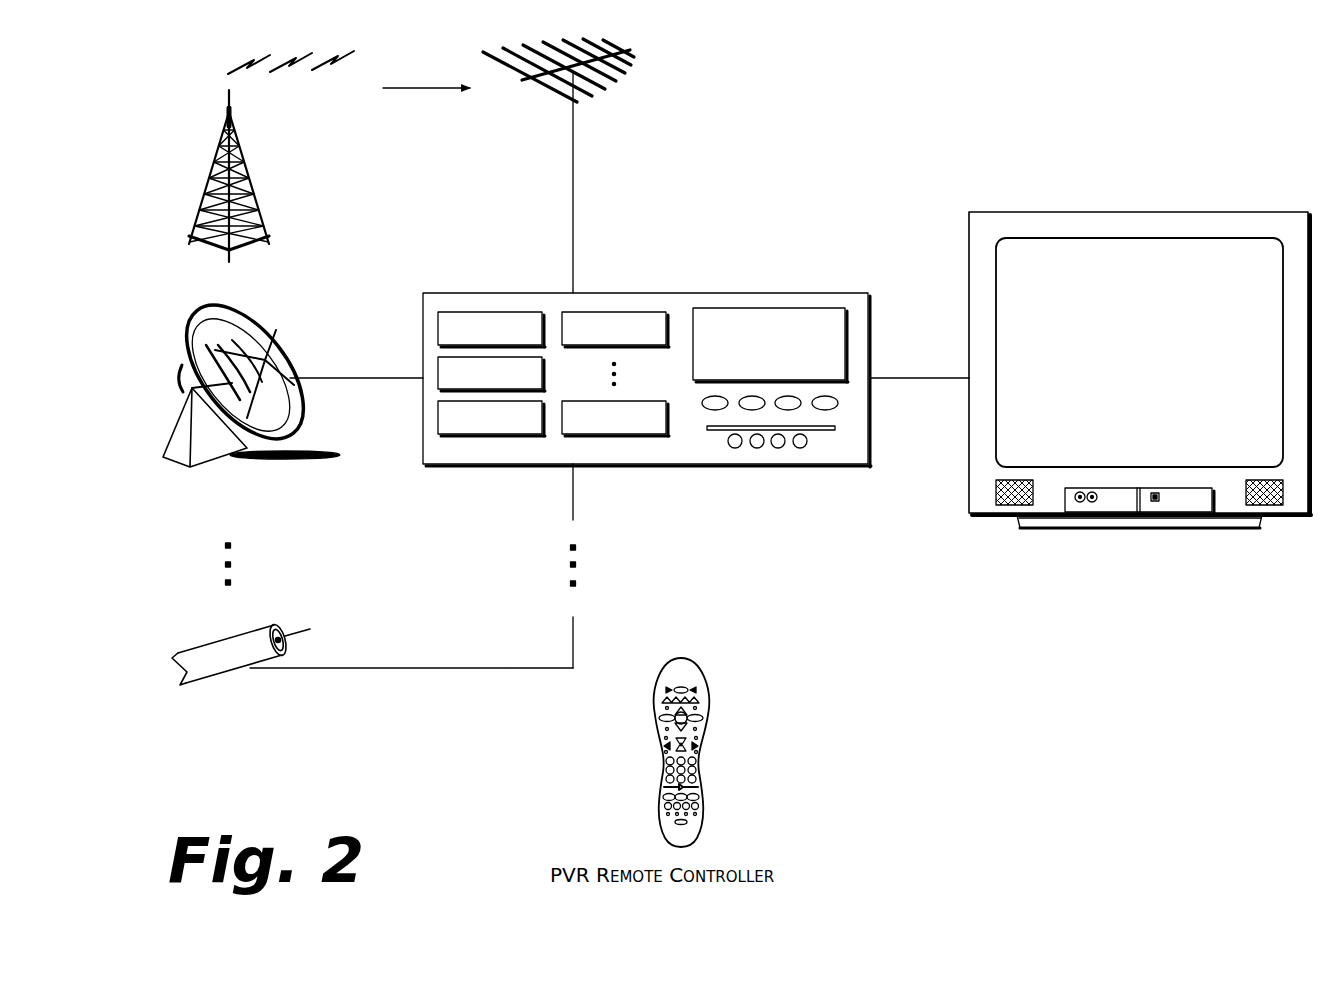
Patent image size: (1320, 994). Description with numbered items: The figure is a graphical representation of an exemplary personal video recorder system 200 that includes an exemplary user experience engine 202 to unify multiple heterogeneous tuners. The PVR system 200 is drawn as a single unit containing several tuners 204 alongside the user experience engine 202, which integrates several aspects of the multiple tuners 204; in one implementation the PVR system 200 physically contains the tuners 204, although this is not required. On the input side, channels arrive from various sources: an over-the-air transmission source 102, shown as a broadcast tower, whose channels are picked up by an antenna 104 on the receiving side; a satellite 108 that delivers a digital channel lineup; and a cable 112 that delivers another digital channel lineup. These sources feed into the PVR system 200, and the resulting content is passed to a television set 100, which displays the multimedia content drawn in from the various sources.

The television set 100 is at (1165, 212).
The over-the-air transmission source 102 is at (257, 212).
The antenna 104 is at (622, 58).
The satellite 108 is at (255, 345).
The cable 112 is at (245, 668).
The PVR system 200 is at (641, 388).
The user experience engine 202 is at (784, 307).
The tuners 204 is at (552, 452).